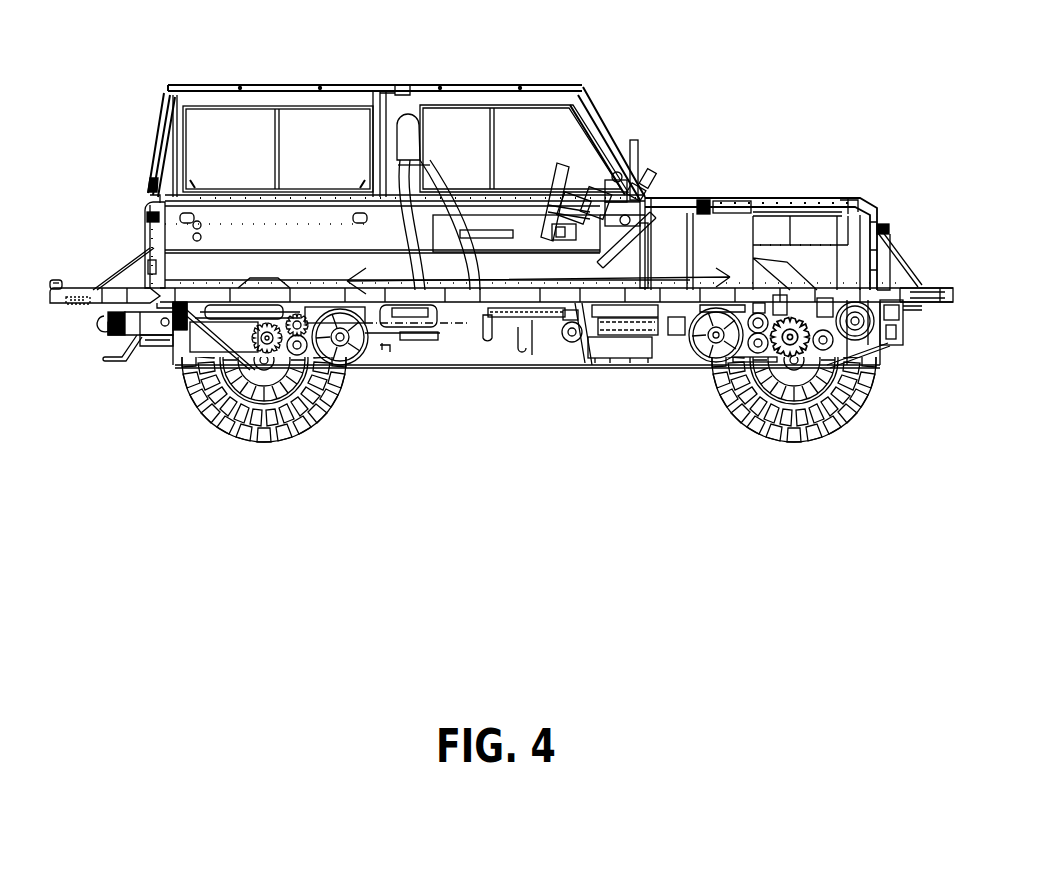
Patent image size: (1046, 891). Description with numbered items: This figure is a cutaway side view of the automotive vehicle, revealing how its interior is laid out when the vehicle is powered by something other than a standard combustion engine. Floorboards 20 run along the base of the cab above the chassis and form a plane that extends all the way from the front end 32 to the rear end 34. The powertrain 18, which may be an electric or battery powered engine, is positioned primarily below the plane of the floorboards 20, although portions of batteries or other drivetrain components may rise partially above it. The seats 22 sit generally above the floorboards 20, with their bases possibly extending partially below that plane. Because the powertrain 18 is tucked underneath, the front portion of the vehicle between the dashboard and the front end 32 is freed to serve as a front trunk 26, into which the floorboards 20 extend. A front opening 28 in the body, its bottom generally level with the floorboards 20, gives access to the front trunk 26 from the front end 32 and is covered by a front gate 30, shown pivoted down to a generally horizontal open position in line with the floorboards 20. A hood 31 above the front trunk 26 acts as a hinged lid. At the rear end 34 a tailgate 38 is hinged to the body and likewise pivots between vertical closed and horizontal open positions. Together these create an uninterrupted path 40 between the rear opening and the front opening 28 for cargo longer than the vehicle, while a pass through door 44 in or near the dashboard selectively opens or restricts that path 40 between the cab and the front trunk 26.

The powertrain 18 is at (675, 360).
The floorboards 20 is at (476, 305).
The seats 22 is at (404, 90).
The front trunk 26 is at (810, 232).
The front opening 28 is at (890, 252).
The front gate 30 is at (953, 302).
The hood 31 is at (780, 203).
The front end 32 is at (888, 217).
The rear end 34 is at (152, 204).
The tailgate 38 is at (72, 290).
The uninterrupted path 40 is at (577, 368).
The pass through door 44 is at (645, 198).